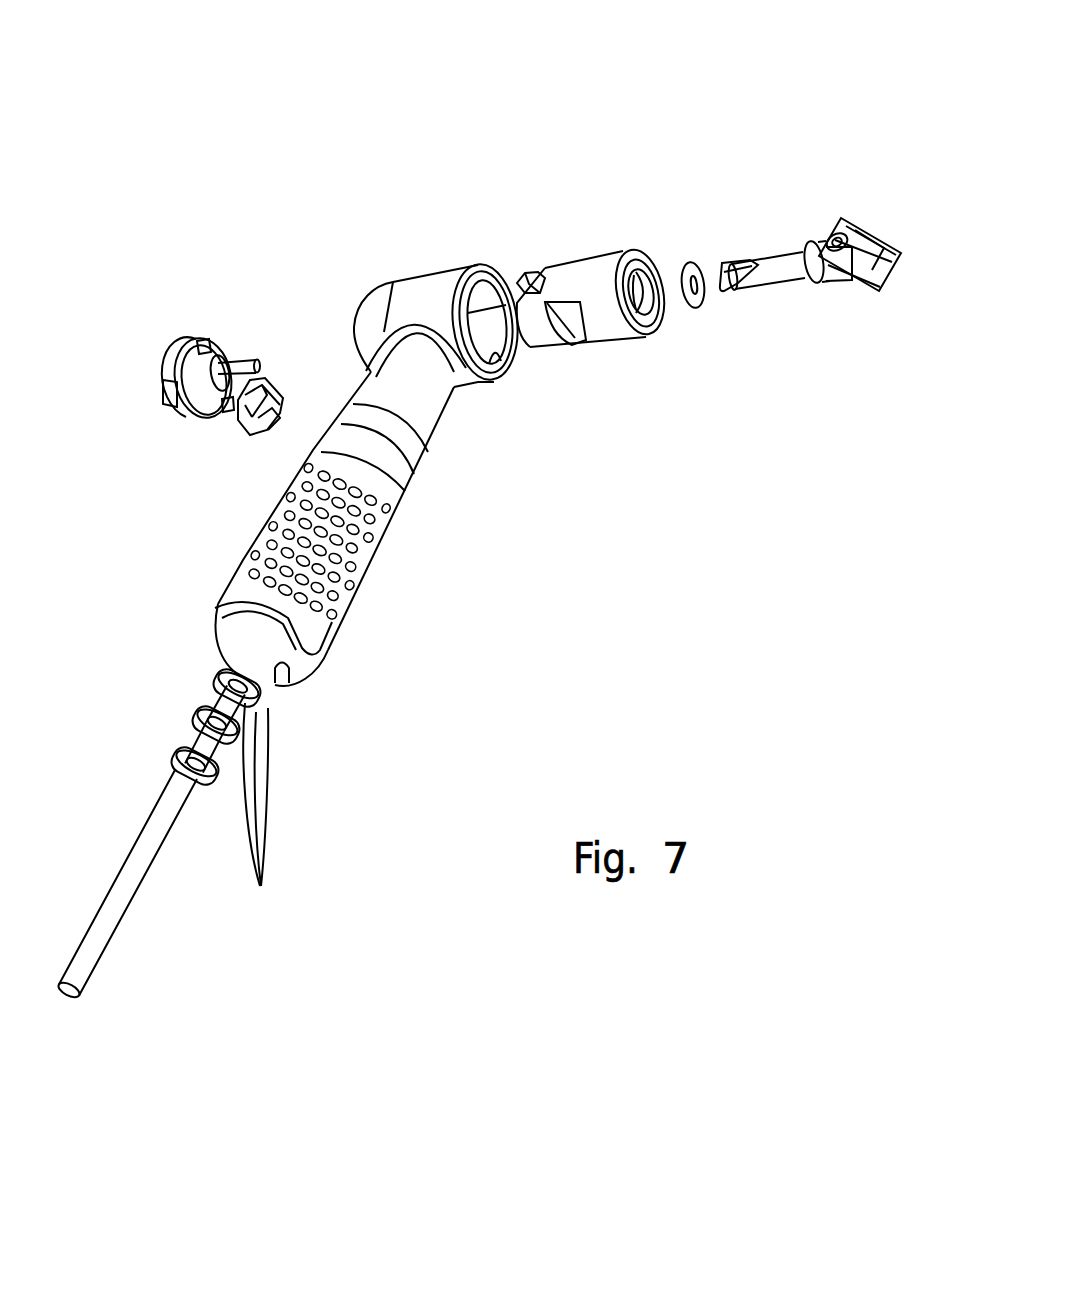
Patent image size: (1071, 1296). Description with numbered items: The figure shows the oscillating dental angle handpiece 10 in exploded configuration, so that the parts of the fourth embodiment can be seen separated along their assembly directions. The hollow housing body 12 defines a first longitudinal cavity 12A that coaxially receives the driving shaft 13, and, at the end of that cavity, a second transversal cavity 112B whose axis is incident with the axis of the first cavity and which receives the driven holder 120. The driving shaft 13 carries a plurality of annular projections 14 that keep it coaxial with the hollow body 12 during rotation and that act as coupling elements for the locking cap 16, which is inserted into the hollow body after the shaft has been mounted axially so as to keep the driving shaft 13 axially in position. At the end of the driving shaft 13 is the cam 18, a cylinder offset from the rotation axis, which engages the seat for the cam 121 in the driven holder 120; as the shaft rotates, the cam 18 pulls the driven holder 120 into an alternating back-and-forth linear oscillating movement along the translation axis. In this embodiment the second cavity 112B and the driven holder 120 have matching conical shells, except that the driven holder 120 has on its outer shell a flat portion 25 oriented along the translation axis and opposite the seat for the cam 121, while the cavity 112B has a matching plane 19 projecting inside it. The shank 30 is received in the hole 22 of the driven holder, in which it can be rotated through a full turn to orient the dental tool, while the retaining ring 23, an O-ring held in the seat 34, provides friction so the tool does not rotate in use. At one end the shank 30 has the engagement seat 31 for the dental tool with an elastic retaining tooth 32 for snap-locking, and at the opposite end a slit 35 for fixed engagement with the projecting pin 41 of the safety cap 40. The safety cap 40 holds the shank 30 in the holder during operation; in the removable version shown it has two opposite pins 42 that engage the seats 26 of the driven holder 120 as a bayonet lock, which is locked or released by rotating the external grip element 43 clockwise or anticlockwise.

The oscillating dental angle handpiece 10 is at (722, 146).
The hollow housing body 12 is at (358, 614).
The first longitudinal cavity 12A is at (277, 667).
The driving shaft 13 is at (93, 955).
The annular projections 14 is at (263, 883).
The locking cap 16 is at (284, 400).
The cam 18 is at (232, 658).
The matching plane 19 is at (488, 262).
The hole 22 is at (656, 332).
The retaining ring (O-ring) 23 is at (694, 262).
The flat portion 25 is at (651, 262).
The seats 26 is at (526, 266).
The shank 30 is at (772, 254).
The engagement seat 31 is at (883, 230).
The elastic retaining tooth 32 is at (826, 230).
The seat for the O-ring 34 is at (809, 290).
The slit 35 is at (737, 289).
The safety cap 40 is at (183, 336).
The projecting pin 41 is at (240, 350).
The opposite pins 42 is at (203, 340).
The external grip element 43 is at (160, 392).
The second transversal cavity 112B is at (505, 382).
The driven holder 120 is at (591, 247).
The seat for the cam 121 is at (580, 340).